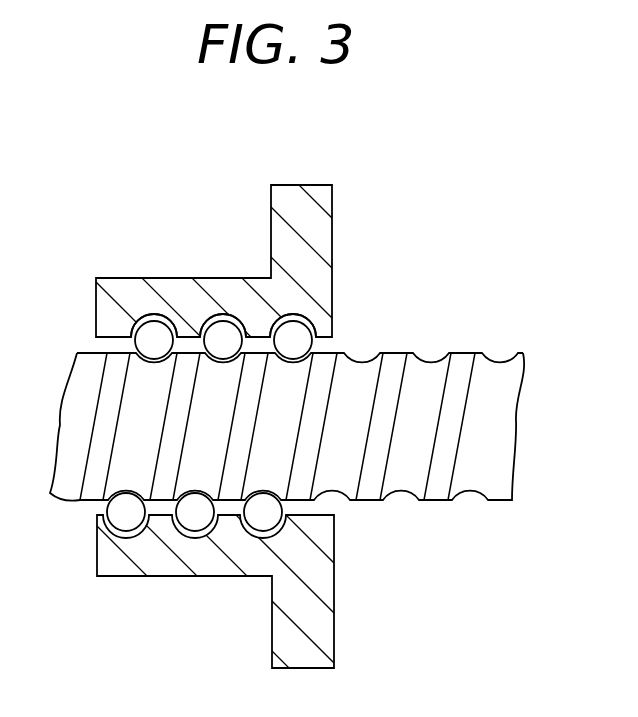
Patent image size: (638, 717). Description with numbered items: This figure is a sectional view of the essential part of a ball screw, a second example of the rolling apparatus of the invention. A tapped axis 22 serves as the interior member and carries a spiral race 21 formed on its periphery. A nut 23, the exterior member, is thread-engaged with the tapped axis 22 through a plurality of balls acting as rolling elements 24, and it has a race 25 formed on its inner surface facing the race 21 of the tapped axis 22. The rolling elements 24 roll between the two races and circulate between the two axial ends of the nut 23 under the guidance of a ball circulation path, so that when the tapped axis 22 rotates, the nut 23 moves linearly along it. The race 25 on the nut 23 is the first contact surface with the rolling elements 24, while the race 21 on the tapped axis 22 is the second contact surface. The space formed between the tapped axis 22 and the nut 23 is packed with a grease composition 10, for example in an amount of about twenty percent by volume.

The grease composition 10 is at (280, 426).
The spiral race 21 is at (305, 425).
The tapped axis 22 is at (527, 357).
The nut 23 is at (124, 278).
The rolling element 24 is at (315, 325).
The race 25 is at (172, 330).